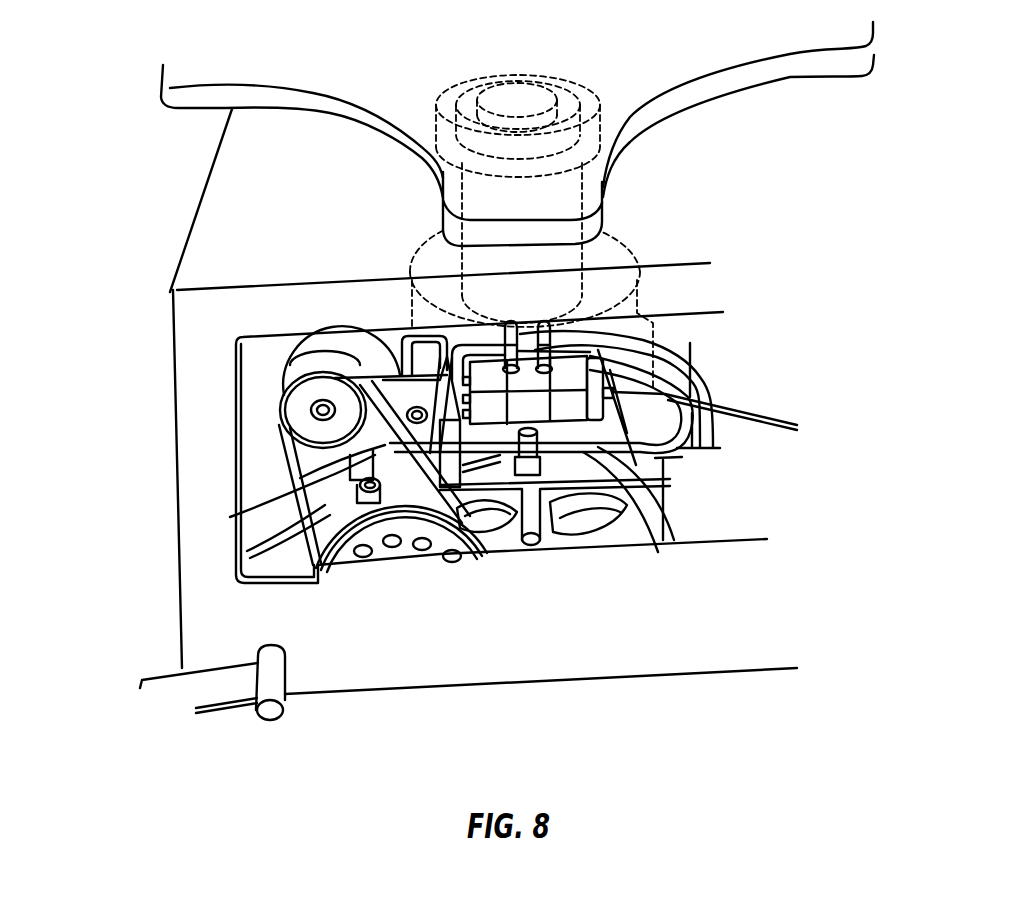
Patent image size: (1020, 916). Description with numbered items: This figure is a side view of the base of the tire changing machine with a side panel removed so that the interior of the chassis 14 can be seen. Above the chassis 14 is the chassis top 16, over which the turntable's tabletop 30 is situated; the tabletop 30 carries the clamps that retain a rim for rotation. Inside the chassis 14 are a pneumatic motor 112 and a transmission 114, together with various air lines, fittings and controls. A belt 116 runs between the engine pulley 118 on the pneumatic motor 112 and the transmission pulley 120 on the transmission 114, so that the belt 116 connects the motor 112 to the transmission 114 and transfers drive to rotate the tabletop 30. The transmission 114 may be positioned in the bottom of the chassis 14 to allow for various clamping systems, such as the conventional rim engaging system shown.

The chassis 14 is at (588, 662).
The chassis top 16 is at (253, 220).
The tabletop 30 is at (684, 110).
The pneumatic motor 112 is at (263, 373).
The transmission 114 is at (657, 335).
The belt 116 is at (300, 478).
The engine pulley 118 is at (297, 418).
The transmission pulley 120 is at (385, 553).